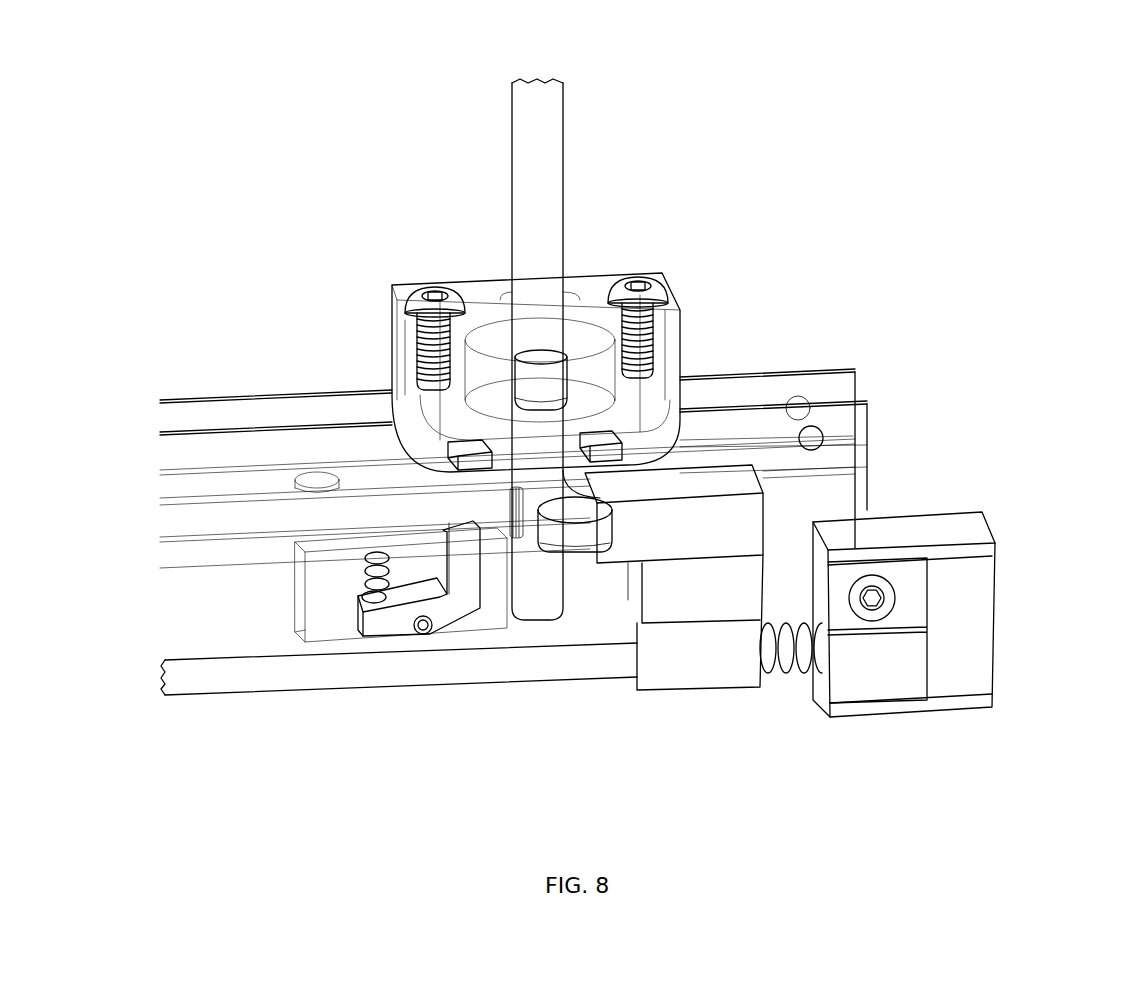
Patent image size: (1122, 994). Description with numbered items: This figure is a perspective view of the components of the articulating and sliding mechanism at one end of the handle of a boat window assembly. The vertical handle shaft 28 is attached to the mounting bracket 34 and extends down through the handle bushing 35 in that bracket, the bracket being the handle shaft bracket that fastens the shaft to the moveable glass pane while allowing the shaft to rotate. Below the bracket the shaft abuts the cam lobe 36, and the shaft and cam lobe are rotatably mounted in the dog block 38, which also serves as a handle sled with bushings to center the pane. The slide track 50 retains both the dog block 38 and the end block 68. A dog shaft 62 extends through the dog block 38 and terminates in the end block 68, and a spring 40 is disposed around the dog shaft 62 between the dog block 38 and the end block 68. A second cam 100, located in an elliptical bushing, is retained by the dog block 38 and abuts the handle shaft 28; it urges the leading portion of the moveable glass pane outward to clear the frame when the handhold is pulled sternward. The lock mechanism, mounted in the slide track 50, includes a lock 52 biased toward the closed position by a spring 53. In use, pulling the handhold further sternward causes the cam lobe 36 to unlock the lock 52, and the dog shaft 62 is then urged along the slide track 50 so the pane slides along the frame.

The handle shaft 28 is at (563, 150).
The handle shaft bracket 34 is at (668, 275).
The handle bushing 35 is at (570, 342).
The cam lobe 36 is at (525, 368).
The dog block 38 is at (678, 690).
The spring 40 is at (775, 670).
The slide track 50 is at (855, 372).
The lock 52 is at (383, 640).
The spring 53 is at (377, 557).
The dog shaft 62 is at (272, 690).
The end block 68 is at (997, 582).
The cam 100 is at (571, 536).